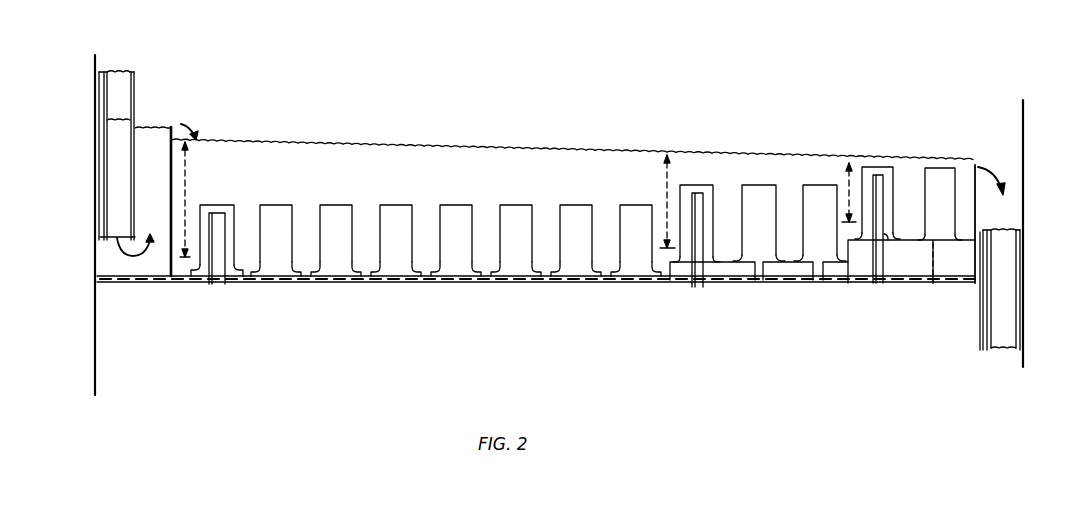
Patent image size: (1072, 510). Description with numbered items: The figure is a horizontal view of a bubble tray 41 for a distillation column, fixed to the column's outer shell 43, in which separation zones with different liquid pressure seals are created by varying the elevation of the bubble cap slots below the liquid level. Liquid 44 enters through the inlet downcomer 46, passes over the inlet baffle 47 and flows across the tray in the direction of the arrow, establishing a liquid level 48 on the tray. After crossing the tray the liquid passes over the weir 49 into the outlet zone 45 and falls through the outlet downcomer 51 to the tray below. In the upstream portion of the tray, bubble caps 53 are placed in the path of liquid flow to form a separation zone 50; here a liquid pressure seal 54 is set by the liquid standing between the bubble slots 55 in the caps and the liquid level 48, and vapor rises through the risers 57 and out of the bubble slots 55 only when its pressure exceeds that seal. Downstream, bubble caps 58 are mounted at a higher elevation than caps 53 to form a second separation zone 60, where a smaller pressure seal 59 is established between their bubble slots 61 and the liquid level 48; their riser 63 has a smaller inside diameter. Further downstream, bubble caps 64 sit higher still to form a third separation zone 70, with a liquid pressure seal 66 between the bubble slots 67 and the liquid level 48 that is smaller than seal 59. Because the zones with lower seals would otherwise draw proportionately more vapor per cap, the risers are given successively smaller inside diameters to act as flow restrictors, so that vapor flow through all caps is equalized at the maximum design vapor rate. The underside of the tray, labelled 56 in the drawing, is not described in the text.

The bubble tray 41 is at (177, 283).
The outer shell 43 is at (93, 310).
The liquid 44 is at (132, 107).
The outlet zone 45 is at (1016, 311).
The downcomer 46 is at (136, 98).
The inlet baffle 47 is at (168, 193).
The liquid level 48 is at (643, 152).
The weir 49 is at (970, 165).
The separation zone 50 is at (458, 191).
The downcomer 51 is at (980, 330).
The bubble caps 53 is at (213, 207).
The liquid pressure seal 54 is at (185, 199).
The bubble slots 55 is at (203, 278).
The housing bottom 56 is at (565, 372).
The risers 57 is at (224, 245).
The bubble caps 58 is at (752, 185).
The pressure seal 59 is at (665, 201).
The separation zone 60 is at (801, 223).
The bubble slots 61 is at (684, 266).
The riser 63 is at (705, 230).
The bubble caps 64 is at (877, 161).
The liquid pressure seal 66 is at (847, 192).
The bubble slots 67 is at (885, 233).
The separation zone 70 is at (922, 203).